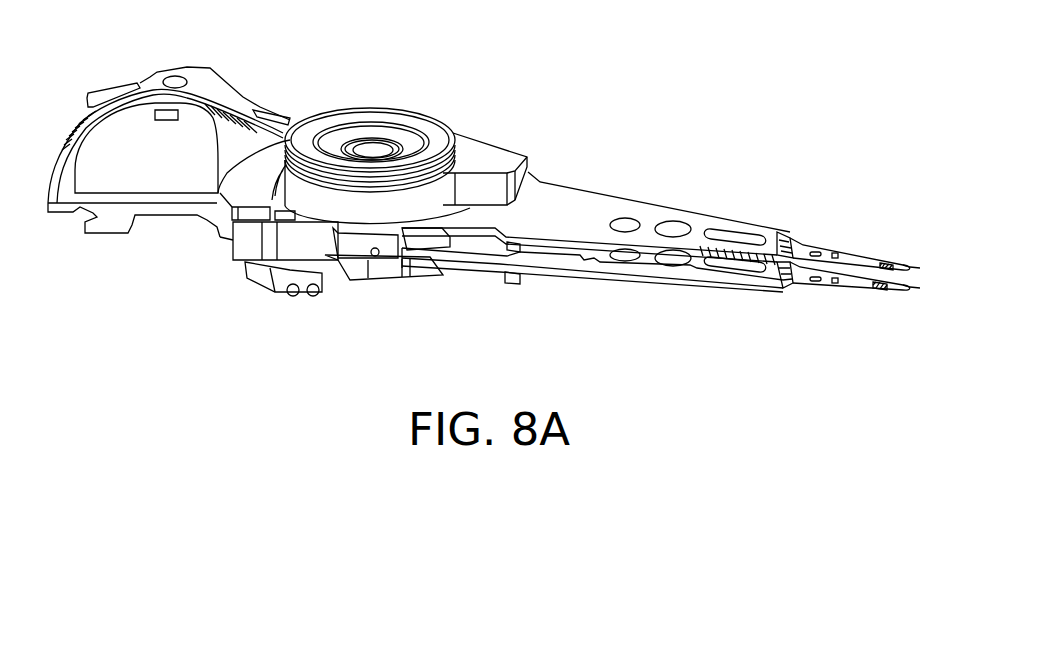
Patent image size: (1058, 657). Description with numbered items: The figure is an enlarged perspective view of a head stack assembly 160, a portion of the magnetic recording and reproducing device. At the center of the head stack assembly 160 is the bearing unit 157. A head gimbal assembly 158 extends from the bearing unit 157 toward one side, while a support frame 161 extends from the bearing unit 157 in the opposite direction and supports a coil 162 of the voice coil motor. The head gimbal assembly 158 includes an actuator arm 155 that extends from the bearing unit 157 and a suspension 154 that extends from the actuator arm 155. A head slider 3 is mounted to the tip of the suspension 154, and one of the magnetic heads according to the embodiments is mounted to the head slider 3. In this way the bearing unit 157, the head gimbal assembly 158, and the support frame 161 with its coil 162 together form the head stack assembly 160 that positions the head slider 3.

The head slider 3 is at (893, 263).
The suspension 154 is at (856, 254).
The actuator arm 155 is at (699, 230).
The bearing unit 157 is at (388, 84).
The head gimbal assembly 158 is at (627, 186).
The head stack assembly 160 is at (588, 110).
The support frame 161 is at (210, 90).
The coil 162 is at (132, 192).